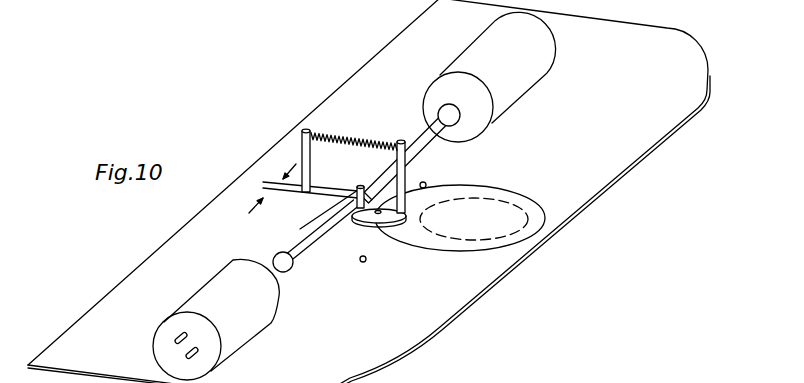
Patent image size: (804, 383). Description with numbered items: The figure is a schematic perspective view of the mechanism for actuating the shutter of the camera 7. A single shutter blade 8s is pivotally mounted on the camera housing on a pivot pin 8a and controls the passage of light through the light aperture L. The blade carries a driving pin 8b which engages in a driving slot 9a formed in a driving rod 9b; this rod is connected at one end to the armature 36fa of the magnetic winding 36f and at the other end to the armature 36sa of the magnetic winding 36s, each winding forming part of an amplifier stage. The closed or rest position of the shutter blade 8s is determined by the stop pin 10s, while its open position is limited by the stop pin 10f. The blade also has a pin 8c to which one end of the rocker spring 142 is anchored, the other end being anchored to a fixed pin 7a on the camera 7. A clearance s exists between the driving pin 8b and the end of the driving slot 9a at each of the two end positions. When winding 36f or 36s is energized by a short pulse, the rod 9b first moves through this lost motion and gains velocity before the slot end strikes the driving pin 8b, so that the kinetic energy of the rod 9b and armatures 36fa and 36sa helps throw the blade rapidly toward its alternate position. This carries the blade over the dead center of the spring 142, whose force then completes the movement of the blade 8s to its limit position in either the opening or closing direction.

The camera 7 is at (645, 143).
The fixed pin 7a is at (303, 150).
The pivot pin 8a is at (378, 214).
The driving pin 8b is at (357, 183).
The pin 8c is at (405, 178).
The shutter blade 8s is at (533, 212).
The driving slot 9a is at (341, 215).
The driving rod 9b is at (420, 134).
The stop pin 10f is at (362, 264).
The stop pin 10s is at (428, 184).
The magnetic winding 36f is at (489, 77).
The armature 36fa is at (441, 106).
The magnetic winding 36s is at (216, 319).
The armature 36sa is at (273, 262).
The rocker spring 142 is at (350, 137).
The light aperture L is at (472, 244).
The clearance s is at (272, 188).